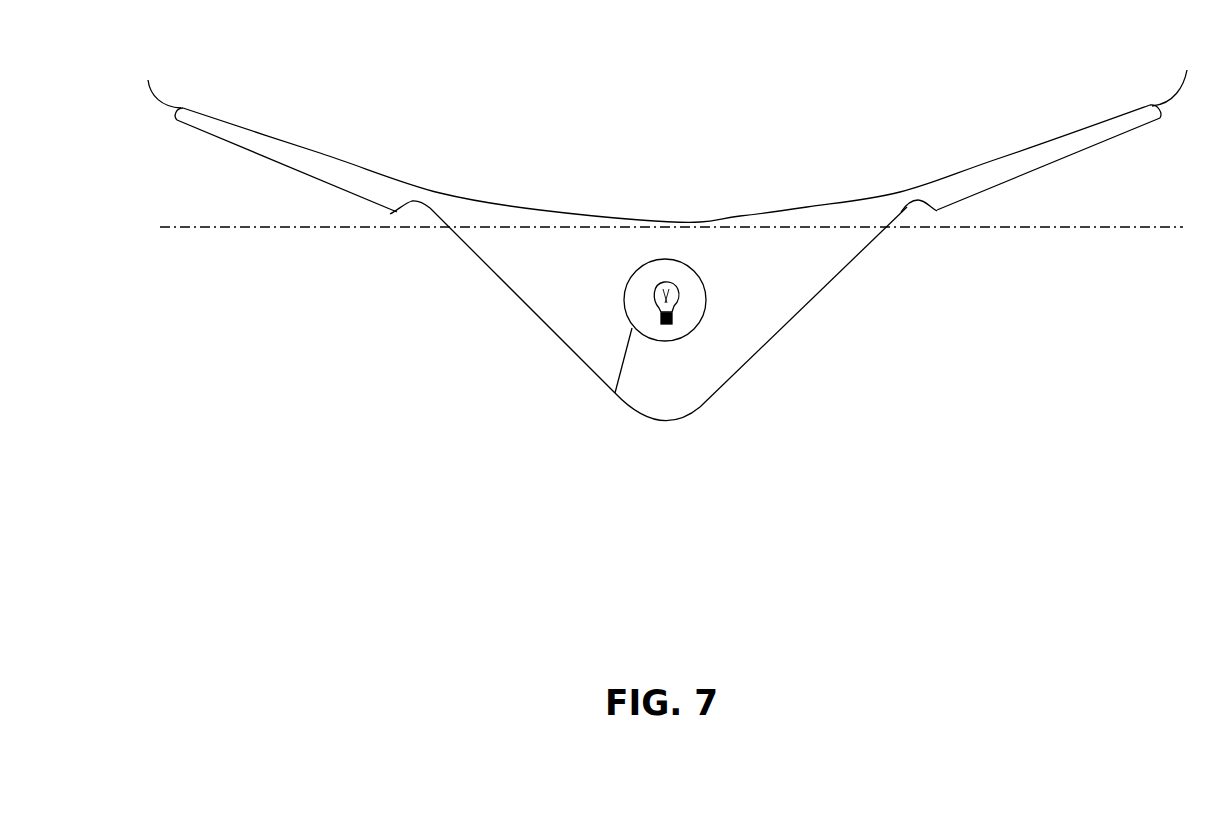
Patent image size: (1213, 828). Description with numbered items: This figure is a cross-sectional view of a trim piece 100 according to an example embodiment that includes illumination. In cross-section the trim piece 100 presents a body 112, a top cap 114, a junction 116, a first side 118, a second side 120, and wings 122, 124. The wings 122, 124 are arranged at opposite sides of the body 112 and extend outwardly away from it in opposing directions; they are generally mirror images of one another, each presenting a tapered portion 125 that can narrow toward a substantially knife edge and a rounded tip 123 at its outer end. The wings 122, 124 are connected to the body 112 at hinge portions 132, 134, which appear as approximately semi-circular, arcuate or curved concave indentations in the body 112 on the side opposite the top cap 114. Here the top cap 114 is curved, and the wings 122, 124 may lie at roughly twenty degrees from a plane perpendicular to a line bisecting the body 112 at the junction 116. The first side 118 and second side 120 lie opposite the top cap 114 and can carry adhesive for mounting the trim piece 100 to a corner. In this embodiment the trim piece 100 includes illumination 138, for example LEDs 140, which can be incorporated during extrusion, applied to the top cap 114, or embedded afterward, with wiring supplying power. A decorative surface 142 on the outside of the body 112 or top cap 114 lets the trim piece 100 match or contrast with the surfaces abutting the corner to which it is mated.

The trim piece 100 is at (443, 66).
The body 112 is at (597, 237).
The top cap 114 is at (698, 222).
The junction 116 is at (668, 420).
The first side 118 is at (502, 280).
The second side 120 is at (773, 333).
The wing 122 is at (1063, 143).
The rounded tip 123 is at (668, 75).
The wing 124 is at (257, 145).
The tapered portion 125 is at (221, 142).
The hinge portion 132 is at (925, 210).
The hinge portion 134 is at (413, 207).
The illumination 138 is at (601, 366).
The LEDs 140 is at (687, 322).
The decorative surface 142 is at (863, 203).